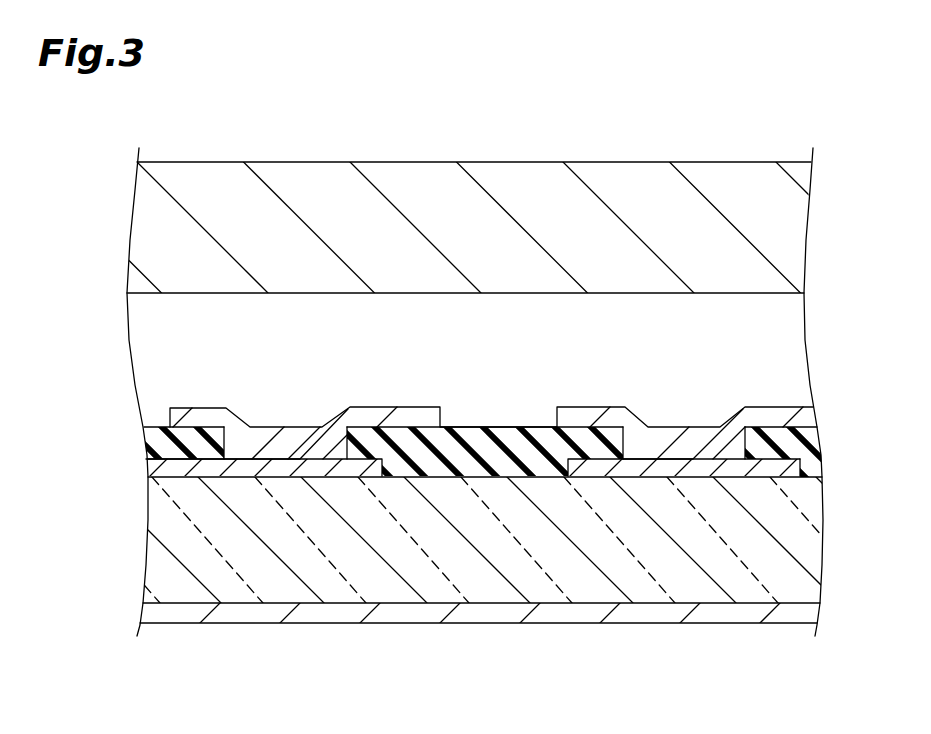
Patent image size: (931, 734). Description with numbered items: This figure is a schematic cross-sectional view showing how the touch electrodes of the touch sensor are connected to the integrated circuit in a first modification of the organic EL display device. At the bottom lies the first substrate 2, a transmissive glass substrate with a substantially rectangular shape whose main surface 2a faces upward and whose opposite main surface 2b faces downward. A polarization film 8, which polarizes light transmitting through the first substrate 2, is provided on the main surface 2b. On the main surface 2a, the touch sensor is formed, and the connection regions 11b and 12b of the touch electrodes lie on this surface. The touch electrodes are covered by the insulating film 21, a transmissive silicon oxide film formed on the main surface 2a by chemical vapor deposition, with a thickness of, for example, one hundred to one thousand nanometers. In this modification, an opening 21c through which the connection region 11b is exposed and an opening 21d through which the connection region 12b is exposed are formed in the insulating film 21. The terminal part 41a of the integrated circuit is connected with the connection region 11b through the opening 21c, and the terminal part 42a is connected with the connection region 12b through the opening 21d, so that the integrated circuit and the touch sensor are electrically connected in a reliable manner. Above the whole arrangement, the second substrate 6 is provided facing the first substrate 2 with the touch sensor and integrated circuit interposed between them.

The second substrate 6 is at (790, 250).
The insulating film 21 is at (500, 421).
The opening 21c is at (230, 441).
The opening 21d is at (630, 443).
The terminal part 41a is at (256, 432).
The terminal part 42a is at (657, 432).
The first substrate 2 is at (808, 552).
The main surface 2a is at (494, 569).
The main surface 2b is at (810, 616).
The connection region 11b is at (268, 462).
The connection region 12b is at (645, 465).
The polarization film 8 is at (740, 615).